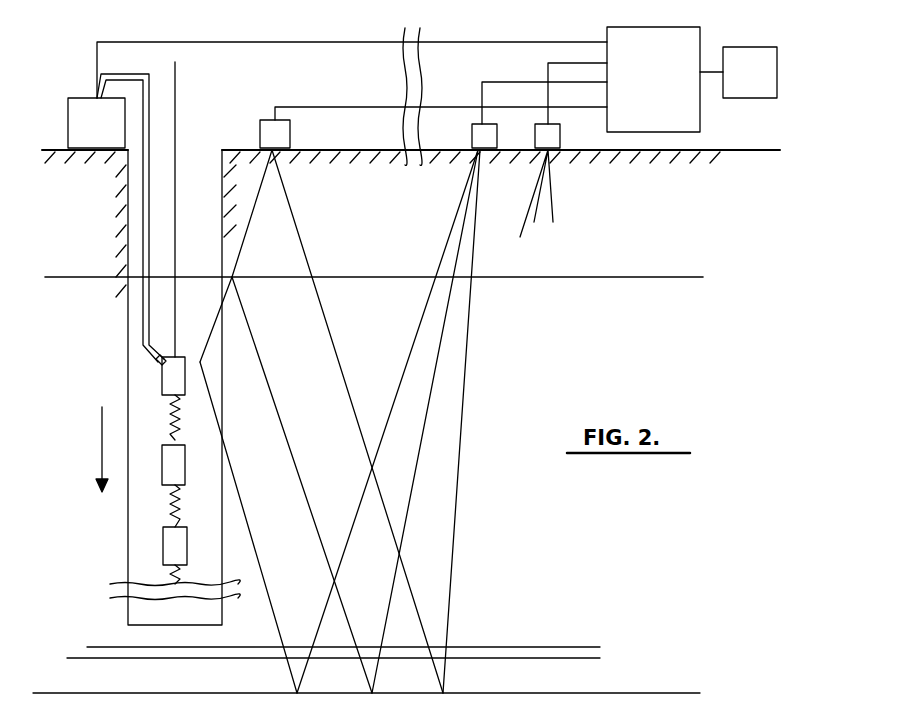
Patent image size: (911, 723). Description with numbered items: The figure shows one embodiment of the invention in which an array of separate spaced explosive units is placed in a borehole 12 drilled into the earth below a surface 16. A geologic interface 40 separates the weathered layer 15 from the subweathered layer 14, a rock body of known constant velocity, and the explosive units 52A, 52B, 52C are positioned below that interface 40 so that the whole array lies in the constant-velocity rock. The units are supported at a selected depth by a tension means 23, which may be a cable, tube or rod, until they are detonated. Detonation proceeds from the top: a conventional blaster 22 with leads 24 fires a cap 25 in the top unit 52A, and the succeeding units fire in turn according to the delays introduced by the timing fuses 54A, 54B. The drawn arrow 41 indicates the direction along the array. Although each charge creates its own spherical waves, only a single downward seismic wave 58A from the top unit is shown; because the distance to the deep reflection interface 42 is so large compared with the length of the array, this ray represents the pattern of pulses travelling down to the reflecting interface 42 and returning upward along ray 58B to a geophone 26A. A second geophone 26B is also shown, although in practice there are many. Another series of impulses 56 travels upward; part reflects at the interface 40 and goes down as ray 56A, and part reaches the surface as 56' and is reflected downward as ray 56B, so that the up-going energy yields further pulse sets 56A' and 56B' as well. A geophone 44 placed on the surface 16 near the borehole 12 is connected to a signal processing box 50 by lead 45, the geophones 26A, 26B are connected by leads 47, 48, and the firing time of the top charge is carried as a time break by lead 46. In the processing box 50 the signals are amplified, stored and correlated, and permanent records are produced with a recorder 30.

The borehole 12 is at (127, 308).
The subweathered layer 14 is at (68, 337).
The weathered layer 15 is at (88, 217).
The surface 16 is at (50, 148).
The blaster 22 is at (85, 98).
The tension means 23 is at (176, 90).
The leads 24 is at (110, 74).
The cap 25 is at (158, 360).
The geophone 26A is at (490, 150).
The geophone 26B is at (556, 149).
The recorder 30 is at (728, 47).
The geologic interface 40 is at (75, 277).
The direction of tool travel 41 is at (100, 454).
The reflection interface 42 is at (53, 692).
The geophone 44 is at (259, 135).
The lead 45 is at (353, 107).
The lead 46 is at (296, 42).
The lead 47 is at (495, 82).
The lead 48 is at (550, 62).
The signal processing box 50 is at (634, 28).
The explosive unit 52A is at (162, 377).
The explosive unit 52B is at (163, 457).
The explosive unit 52C is at (162, 546).
The timing fuse 54A is at (170, 415).
The timing fuse 54B is at (172, 507).
The up-going seismic impulses 56 is at (207, 319).
The surface-reaching ray 56' is at (259, 213).
The ray 56A is at (302, 485).
The ray 56B is at (357, 421).
The seismic pulse ray 56A' is at (459, 421).
The seismic pulse ray 56B' is at (495, 421).
The seismic wave 58A is at (268, 470).
The ray 58B is at (377, 478).